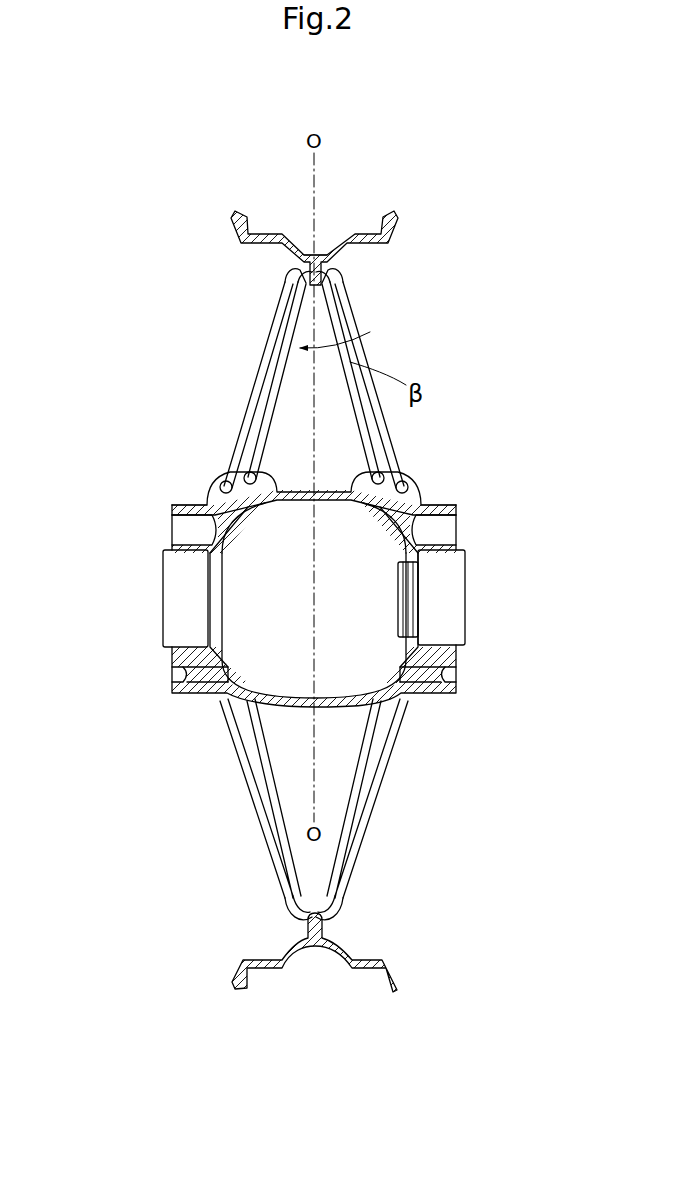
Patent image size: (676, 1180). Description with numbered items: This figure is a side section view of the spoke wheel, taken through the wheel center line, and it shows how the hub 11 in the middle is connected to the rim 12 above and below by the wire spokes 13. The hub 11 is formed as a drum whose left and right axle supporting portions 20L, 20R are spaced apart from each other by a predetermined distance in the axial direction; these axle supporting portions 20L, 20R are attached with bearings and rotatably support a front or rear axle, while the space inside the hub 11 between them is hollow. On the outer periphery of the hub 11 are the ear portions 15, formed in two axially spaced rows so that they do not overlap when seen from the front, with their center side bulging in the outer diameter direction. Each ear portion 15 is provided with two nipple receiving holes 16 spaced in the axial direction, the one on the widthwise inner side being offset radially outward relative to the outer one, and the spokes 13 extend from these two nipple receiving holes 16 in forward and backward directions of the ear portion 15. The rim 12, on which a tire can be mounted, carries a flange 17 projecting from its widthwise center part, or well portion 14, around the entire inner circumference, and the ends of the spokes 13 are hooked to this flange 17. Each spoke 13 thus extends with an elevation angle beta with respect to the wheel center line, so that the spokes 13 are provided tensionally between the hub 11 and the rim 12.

The hub 11 is at (458, 655).
The rim 12 is at (363, 228).
The wire spokes 13 is at (257, 408).
The widthwise center part (well portion) 14 is at (300, 263).
The ear portion 15 is at (200, 502).
The nipple receiving hole 16 is at (249, 471).
The flange 17 is at (330, 263).
The left axle supporting portion 20L is at (162, 583).
The right axle supporting portion 20R is at (466, 580).